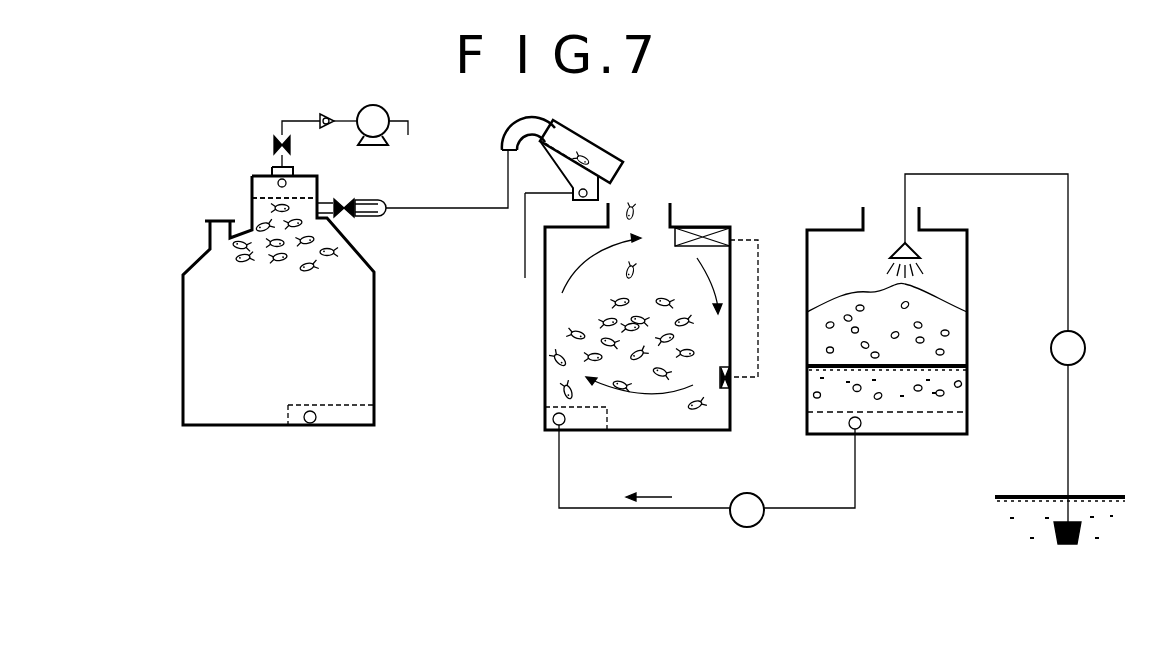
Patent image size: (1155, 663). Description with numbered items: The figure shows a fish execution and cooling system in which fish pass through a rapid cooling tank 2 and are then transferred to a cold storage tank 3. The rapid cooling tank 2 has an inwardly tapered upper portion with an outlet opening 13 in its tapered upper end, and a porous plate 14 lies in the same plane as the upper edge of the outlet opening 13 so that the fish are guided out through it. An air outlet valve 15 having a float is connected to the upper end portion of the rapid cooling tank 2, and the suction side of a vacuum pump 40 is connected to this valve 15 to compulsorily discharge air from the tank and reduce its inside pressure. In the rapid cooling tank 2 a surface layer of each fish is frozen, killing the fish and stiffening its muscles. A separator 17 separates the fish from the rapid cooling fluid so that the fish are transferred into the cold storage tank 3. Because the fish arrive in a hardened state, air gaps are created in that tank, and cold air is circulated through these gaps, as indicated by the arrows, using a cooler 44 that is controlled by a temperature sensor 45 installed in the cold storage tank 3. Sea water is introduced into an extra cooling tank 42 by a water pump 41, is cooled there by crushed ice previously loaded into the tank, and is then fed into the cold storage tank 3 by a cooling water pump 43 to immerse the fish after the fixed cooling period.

The rapid cooling tank 2 is at (183, 383).
The cold storage tank 3 is at (545, 388).
The outlet opening 13 is at (317, 205).
The porous plate 14 is at (252, 195).
The air outlet valve 15 is at (275, 140).
The separator 17 is at (600, 131).
The vacuum pump 40 is at (385, 110).
The water pump 41 is at (1076, 358).
The extra cooling tank 42 is at (807, 306).
The cooling water pump 43 is at (756, 521).
The cooler 44 is at (704, 228).
The temperature sensor 45 is at (730, 385).